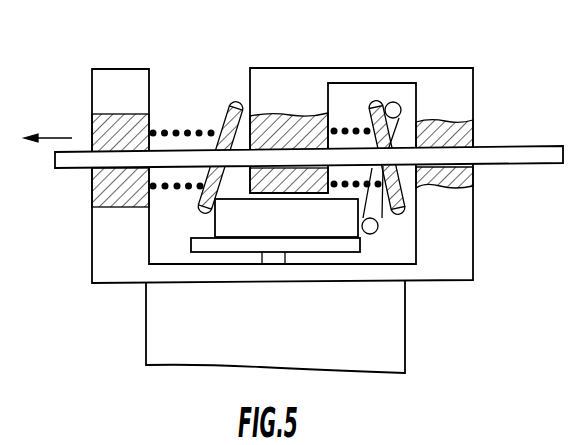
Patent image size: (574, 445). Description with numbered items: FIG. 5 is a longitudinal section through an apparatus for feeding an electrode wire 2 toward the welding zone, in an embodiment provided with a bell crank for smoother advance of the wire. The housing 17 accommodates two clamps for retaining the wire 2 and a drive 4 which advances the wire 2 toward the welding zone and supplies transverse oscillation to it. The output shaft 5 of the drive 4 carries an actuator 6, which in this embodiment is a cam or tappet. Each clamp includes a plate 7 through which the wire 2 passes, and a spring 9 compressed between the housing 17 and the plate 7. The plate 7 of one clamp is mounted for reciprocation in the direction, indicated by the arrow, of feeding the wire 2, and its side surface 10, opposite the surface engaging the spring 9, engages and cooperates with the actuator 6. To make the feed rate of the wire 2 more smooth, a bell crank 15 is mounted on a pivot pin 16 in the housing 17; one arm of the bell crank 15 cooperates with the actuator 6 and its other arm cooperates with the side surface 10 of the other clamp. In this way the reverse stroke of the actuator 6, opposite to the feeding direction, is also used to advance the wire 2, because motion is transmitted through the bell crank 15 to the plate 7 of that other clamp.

The wire 2 is at (527, 149).
The drive 4 is at (207, 360).
The output shaft 5 is at (272, 256).
The actuator 6 is at (215, 221).
The plate 7 is at (234, 104).
The spring 9 is at (177, 128).
The side surface 10 is at (403, 184).
The bell crank 15 is at (390, 102).
The pivot pin 16 is at (393, 148).
The housing 17 is at (459, 104).